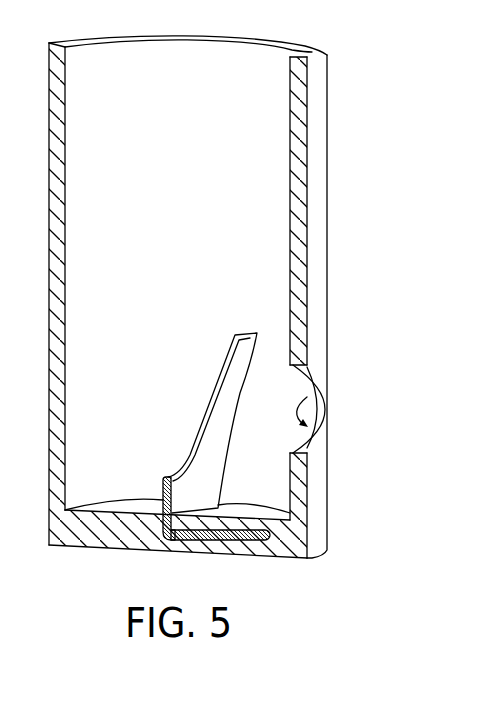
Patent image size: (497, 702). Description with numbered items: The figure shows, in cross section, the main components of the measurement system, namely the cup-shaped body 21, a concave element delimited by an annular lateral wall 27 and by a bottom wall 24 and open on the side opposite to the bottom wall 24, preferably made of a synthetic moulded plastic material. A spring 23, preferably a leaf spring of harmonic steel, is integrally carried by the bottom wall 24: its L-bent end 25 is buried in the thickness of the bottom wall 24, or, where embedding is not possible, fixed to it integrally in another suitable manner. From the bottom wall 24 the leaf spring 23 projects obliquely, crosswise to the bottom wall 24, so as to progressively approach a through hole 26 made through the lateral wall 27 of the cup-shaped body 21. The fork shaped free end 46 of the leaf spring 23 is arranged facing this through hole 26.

The cup-shaped body 21 is at (358, 127).
The lateral wall 27 is at (300, 243).
The through hole 26 is at (307, 395).
The bottom wall 24 is at (77, 538).
The fork shaped free end 46 is at (252, 334).
The spring 23 is at (163, 478).
The L-bent end 25 is at (253, 545).